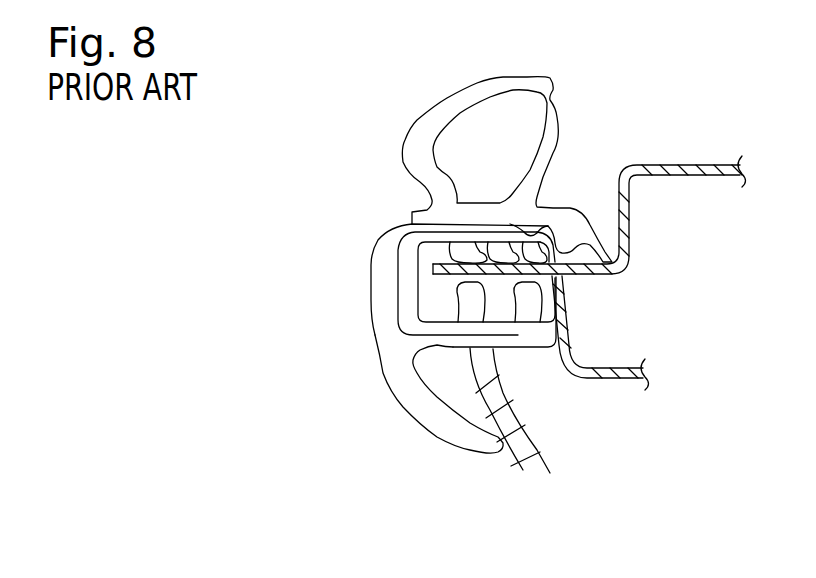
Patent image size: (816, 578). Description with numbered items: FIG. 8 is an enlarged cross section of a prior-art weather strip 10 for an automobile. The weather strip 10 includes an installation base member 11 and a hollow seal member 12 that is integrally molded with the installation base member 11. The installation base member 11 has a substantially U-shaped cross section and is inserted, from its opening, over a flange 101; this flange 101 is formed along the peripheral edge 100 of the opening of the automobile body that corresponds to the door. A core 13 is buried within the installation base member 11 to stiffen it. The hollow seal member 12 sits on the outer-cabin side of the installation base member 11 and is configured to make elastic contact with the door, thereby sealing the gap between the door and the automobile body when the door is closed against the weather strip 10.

The weather strip 10 is at (594, 88).
The installation base member 11 is at (453, 350).
The hollow seal member 12 is at (558, 150).
The core 13 is at (398, 289).
The peripheral edge 100 is at (630, 200).
The flange 101 is at (487, 277).